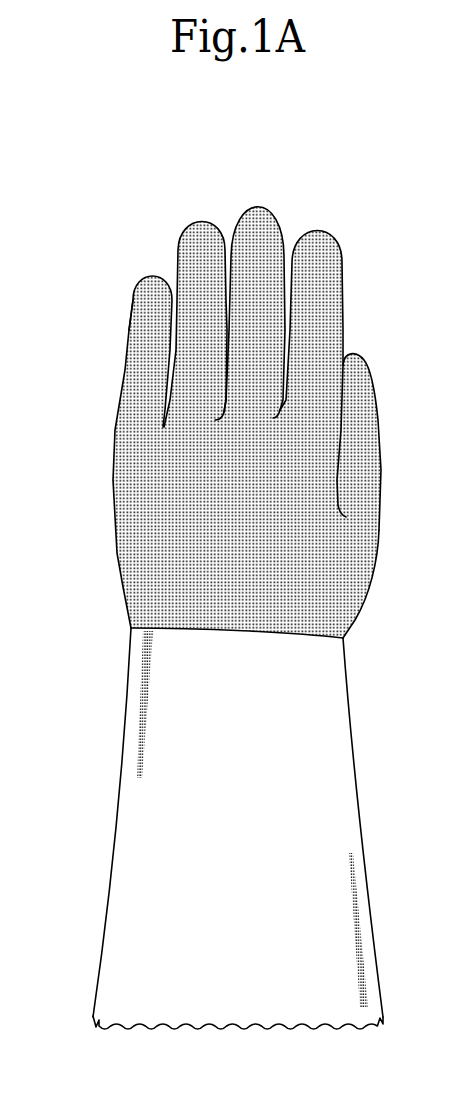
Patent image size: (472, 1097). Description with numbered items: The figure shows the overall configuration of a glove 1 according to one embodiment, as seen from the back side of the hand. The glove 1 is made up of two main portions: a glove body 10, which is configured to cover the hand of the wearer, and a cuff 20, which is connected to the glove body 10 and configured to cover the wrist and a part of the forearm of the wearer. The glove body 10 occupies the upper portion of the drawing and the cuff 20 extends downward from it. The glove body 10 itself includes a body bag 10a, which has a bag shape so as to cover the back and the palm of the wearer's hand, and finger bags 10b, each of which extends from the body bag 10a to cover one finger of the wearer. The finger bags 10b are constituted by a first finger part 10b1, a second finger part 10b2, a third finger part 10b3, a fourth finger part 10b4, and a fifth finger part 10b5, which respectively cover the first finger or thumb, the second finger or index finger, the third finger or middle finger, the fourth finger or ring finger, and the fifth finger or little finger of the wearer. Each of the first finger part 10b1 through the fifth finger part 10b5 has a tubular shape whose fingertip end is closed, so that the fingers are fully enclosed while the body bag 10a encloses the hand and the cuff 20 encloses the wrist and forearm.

The glove 1 is at (334, 144).
The glove body 10 is at (123, 582).
The body bag 10a is at (150, 553).
The finger bags 10b is at (226, 312).
The first finger part 10b1 is at (357, 373).
The second finger part 10b2 is at (320, 265).
The third finger part 10b3 is at (267, 218).
The fourth finger part 10b4 is at (198, 243).
The fifth finger part 10b5 is at (143, 322).
The cuff 20 is at (115, 820).